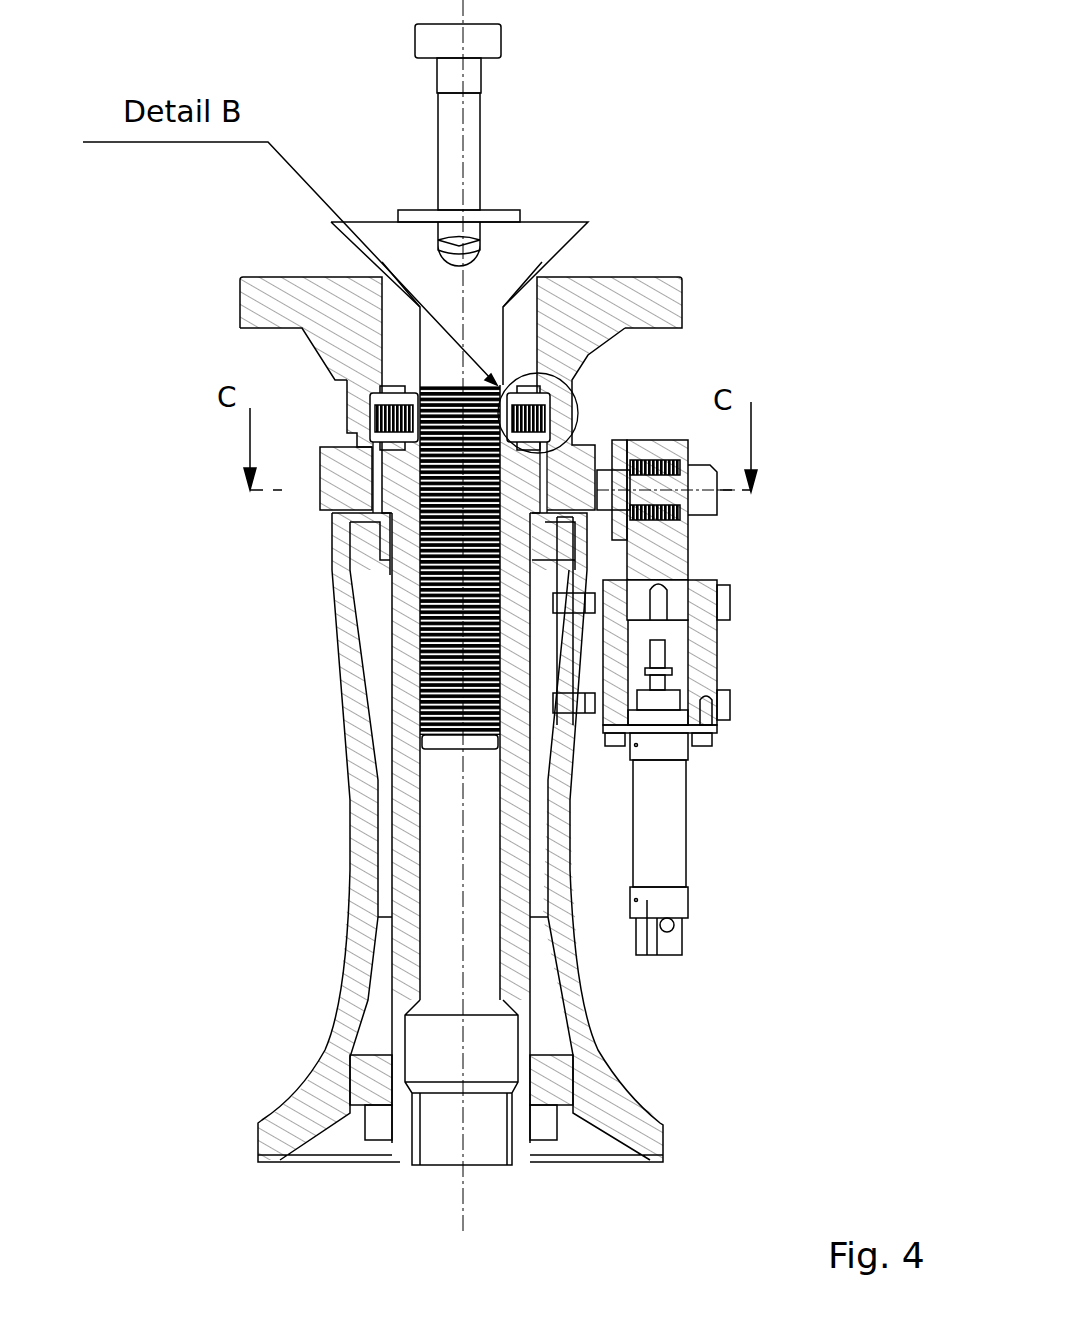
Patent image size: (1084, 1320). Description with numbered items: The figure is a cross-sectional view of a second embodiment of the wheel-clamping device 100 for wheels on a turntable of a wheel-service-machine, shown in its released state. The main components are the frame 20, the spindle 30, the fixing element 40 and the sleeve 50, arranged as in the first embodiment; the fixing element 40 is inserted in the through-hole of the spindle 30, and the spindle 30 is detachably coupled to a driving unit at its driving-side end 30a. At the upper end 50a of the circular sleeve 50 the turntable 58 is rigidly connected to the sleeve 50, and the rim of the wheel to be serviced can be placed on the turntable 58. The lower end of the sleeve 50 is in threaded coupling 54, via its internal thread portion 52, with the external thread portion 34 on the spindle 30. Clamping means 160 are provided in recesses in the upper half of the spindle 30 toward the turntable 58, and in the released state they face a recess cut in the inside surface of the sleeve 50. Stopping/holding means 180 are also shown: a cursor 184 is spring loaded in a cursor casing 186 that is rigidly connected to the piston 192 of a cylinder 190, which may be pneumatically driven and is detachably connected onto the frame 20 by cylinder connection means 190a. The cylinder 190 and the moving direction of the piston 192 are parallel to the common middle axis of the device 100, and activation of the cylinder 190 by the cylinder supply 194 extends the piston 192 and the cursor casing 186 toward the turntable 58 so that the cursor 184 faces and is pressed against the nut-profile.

The wheel-clamping device 100 is at (728, 60).
The fixing element 40 is at (522, 245).
The turntable 58 is at (627, 303).
The upper end of sleeve 50a is at (580, 337).
The sleeve 50 is at (567, 362).
The internal thread portion 52 is at (362, 485).
The threaded coupling 54 is at (370, 487).
The external thread portion 34 is at (385, 498).
The clamping means 160 is at (349, 402).
The spindle 30 is at (397, 945).
The driving-side end 30a is at (523, 1142).
The frame 20 is at (357, 832).
The stopping/holding means 180 is at (717, 716).
The cursor 184 is at (640, 487).
The cursor casing 186 is at (660, 545).
The piston 192 is at (673, 590).
The cylinder connection means 190a is at (580, 683).
The cylinder 190 is at (662, 810).
The cylinder supply 194 is at (668, 927).